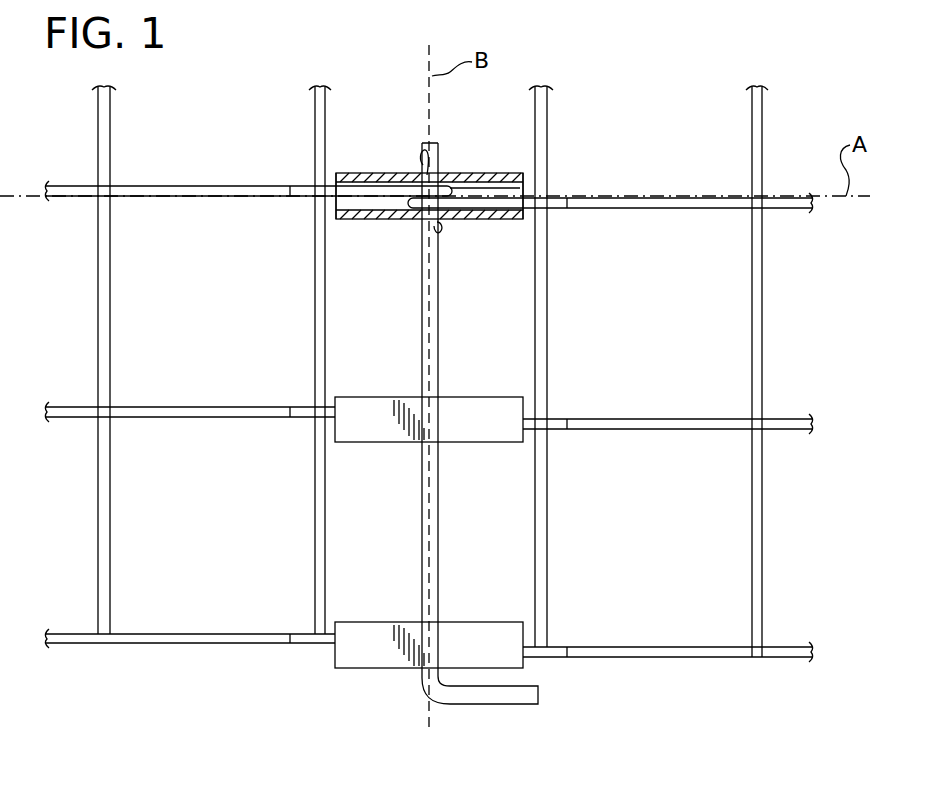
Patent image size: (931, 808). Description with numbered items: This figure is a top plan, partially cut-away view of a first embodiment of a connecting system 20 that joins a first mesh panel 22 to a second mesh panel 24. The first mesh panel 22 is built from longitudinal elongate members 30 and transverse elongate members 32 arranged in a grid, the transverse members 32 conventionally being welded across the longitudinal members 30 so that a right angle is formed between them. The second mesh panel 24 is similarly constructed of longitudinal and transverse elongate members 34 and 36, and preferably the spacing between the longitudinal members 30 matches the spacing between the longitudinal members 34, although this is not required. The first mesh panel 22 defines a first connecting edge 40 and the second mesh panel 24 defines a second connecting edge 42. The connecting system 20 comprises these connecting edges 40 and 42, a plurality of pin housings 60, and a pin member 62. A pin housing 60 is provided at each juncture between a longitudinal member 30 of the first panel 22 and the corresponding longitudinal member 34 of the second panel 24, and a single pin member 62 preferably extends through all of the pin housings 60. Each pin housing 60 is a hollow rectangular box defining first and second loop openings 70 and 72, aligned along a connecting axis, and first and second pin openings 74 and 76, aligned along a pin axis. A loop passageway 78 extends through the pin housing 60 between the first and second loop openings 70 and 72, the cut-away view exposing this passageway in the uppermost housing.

The connecting system 20 is at (455, 146).
The first mesh panel 22 is at (673, 140).
The second mesh panel 24 is at (187, 140).
The longitudinal elongate members 30 is at (648, 202).
The transverse elongate members 32 is at (753, 290).
The longitudinal elongate members 34 is at (150, 190).
The transverse elongate members 36 is at (103, 287).
The first connecting edge 40 is at (465, 170).
The second connecting edge 42 is at (398, 170).
The pin housing 60 is at (379, 178).
The pin member 62 is at (423, 343).
The first loop opening 70 is at (525, 190).
The second loop opening 72 is at (334, 205).
The first pin opening 74 is at (436, 222).
The second pin opening 76 is at (423, 163).
The loop passageway 78 is at (482, 188).